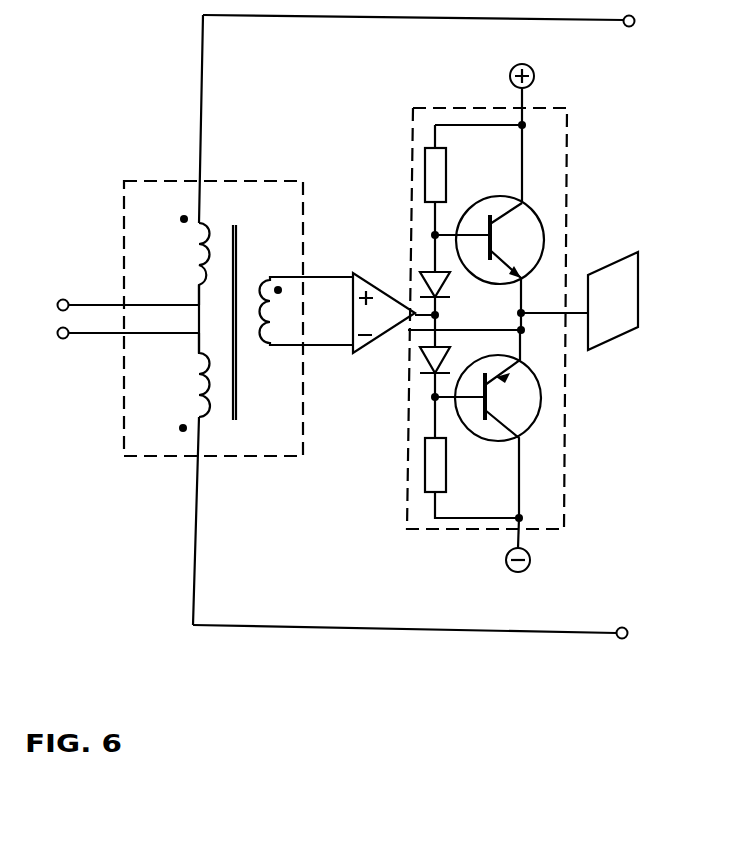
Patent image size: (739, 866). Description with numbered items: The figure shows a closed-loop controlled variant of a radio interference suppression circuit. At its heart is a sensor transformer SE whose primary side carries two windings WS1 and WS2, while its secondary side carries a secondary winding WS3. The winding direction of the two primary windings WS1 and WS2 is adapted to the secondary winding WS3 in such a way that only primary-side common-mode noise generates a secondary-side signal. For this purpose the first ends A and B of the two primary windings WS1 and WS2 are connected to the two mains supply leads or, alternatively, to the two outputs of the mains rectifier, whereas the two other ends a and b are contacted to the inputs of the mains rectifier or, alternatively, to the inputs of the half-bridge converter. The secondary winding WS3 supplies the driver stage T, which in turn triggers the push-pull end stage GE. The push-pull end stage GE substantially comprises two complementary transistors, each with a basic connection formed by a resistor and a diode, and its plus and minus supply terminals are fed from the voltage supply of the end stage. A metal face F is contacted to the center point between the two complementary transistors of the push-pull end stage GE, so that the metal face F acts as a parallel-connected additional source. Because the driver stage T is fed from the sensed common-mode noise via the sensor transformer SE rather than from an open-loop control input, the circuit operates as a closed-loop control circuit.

The other end of primary winding a is at (429, 20).
The other end of primary winding b is at (422, 632).
The first end of primary winding WS1 A is at (127, 288).
The first end of primary winding WS2 B is at (127, 351).
The sensor transformer SE is at (238, 365).
The primary winding WS1 is at (173, 260).
The primary winding WS2 is at (170, 382).
The secondary winding WS3 is at (249, 307).
The driver stage T is at (368, 360).
The push-pull end stage GE is at (428, 546).
The metal face F is at (646, 290).